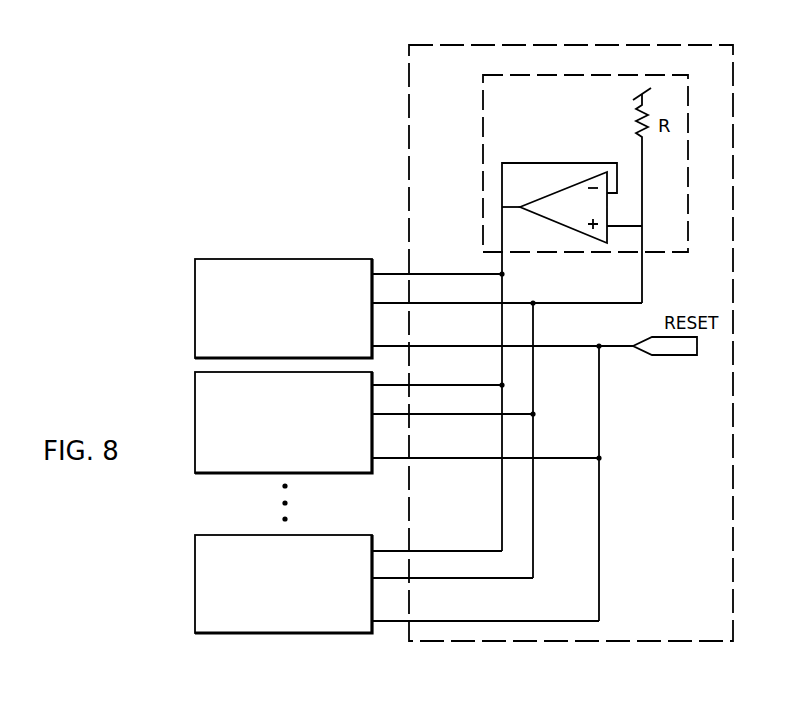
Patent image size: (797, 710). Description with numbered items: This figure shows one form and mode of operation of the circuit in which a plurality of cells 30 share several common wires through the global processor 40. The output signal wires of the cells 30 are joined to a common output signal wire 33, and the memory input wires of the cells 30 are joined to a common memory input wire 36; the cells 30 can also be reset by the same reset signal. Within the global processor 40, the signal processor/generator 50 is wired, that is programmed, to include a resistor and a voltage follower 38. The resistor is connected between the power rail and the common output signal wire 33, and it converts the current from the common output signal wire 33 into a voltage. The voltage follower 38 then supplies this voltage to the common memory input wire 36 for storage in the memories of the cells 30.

The cell 30 is at (231, 258).
The common output signal wire 33 is at (534, 502).
The common memory input wire 36 is at (501, 525).
The voltage follower 38 is at (561, 150).
The global processor 40 is at (408, 128).
The signal processor/generator 50 is at (482, 172).